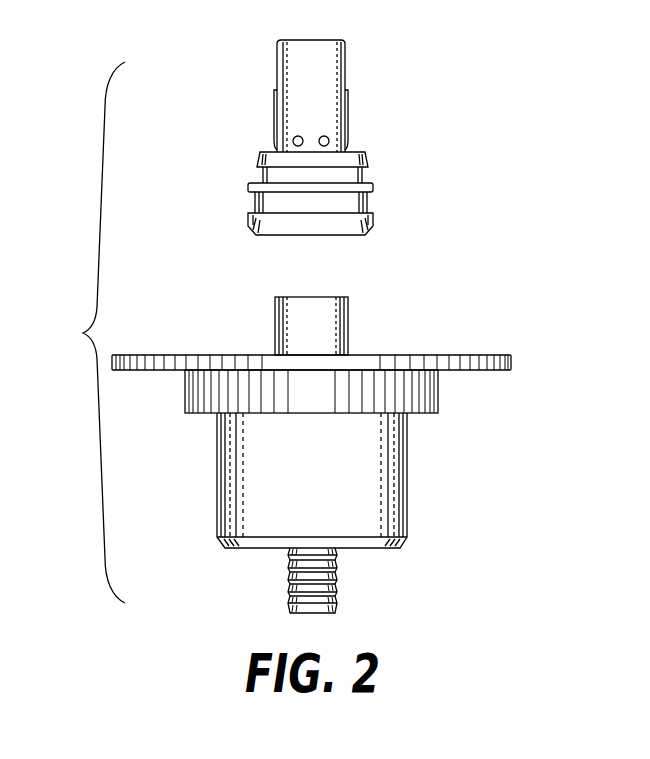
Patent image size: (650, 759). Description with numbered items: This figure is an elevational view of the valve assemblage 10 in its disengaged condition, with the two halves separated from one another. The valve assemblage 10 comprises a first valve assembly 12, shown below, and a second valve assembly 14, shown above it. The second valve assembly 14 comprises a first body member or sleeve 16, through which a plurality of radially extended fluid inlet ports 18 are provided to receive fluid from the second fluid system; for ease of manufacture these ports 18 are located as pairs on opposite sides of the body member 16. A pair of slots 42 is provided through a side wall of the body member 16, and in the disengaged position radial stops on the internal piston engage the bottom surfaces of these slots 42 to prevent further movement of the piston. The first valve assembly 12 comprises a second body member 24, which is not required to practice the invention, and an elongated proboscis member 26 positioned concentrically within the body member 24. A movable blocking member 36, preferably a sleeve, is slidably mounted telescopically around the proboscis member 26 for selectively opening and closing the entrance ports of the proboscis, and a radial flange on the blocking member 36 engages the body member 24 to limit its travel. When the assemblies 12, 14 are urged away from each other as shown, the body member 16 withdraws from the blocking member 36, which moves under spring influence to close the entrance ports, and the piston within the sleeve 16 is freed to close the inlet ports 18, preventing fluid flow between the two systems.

The valve assemblage 10 is at (90, 332).
The first valve assembly 12 is at (344, 455).
The second valve assembly 14 is at (358, 137).
The first body member or sleeve 16 is at (348, 113).
The fluid inlet ports 18 is at (293, 141).
The second body member 24 is at (407, 477).
The proboscis member 26 is at (337, 588).
The movable blocking member 36 is at (348, 330).
The slots 42 is at (277, 70).